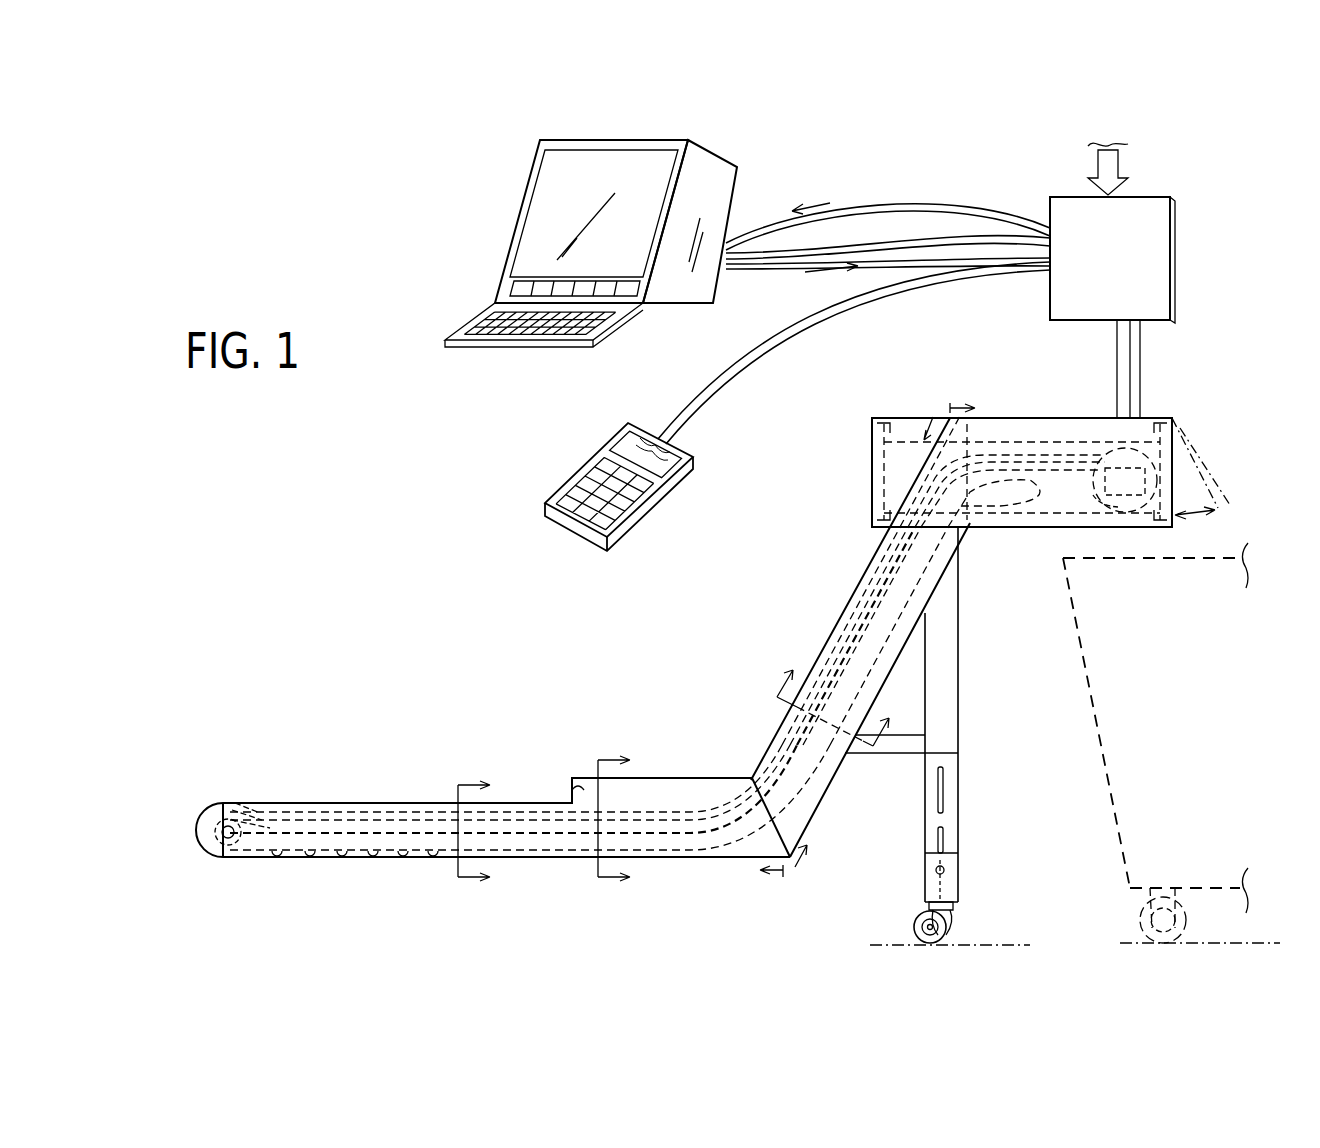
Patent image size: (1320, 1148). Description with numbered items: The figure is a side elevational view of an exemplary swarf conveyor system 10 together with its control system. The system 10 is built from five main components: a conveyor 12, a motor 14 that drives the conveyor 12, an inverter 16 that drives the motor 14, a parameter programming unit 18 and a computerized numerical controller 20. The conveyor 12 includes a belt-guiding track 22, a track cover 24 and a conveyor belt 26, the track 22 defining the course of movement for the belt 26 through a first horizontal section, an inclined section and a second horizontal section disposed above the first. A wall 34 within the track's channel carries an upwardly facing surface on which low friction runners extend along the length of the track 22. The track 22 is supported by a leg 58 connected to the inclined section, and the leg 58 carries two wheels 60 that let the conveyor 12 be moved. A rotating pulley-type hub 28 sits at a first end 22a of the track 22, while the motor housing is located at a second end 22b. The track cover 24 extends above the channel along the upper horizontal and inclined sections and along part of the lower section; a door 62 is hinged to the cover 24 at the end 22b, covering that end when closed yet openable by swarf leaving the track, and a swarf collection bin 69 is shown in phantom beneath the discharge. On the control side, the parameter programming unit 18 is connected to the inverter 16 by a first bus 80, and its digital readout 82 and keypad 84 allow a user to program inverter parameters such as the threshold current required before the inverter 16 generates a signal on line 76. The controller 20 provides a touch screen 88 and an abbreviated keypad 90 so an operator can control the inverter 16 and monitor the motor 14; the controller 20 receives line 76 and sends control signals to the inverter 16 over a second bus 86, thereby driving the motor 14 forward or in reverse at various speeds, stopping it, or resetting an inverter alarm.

The swarf conveyor system 10 is at (682, 622).
The conveyor 12 is at (474, 831).
The motor 14 is at (1115, 523).
The inverter 16 is at (1158, 289).
The parameter programming unit 18 is at (612, 486).
The computerized numerical controller 20 is at (545, 198).
The belt-guiding track 22 is at (308, 832).
The first end 22a is at (242, 805).
The second end 22b is at (1140, 527).
The track cover 24 is at (600, 637).
The conveyor belt 26 is at (212, 808).
The rotating pulley-type hub 28 is at (200, 841).
The wall 34 is at (266, 840).
The leg 58 is at (940, 667).
The wheels 60 is at (947, 929).
The door 62 is at (1204, 476).
The swarf collection bin 69 is at (1125, 695).
The line 76 is at (854, 210).
The first bus 80 is at (776, 331).
The digital readout 82 is at (618, 440).
The keypad 84 is at (565, 509).
The second bus 86 is at (790, 258).
The touch screen 88 is at (657, 171).
The abbreviated keypad 90 is at (492, 310).